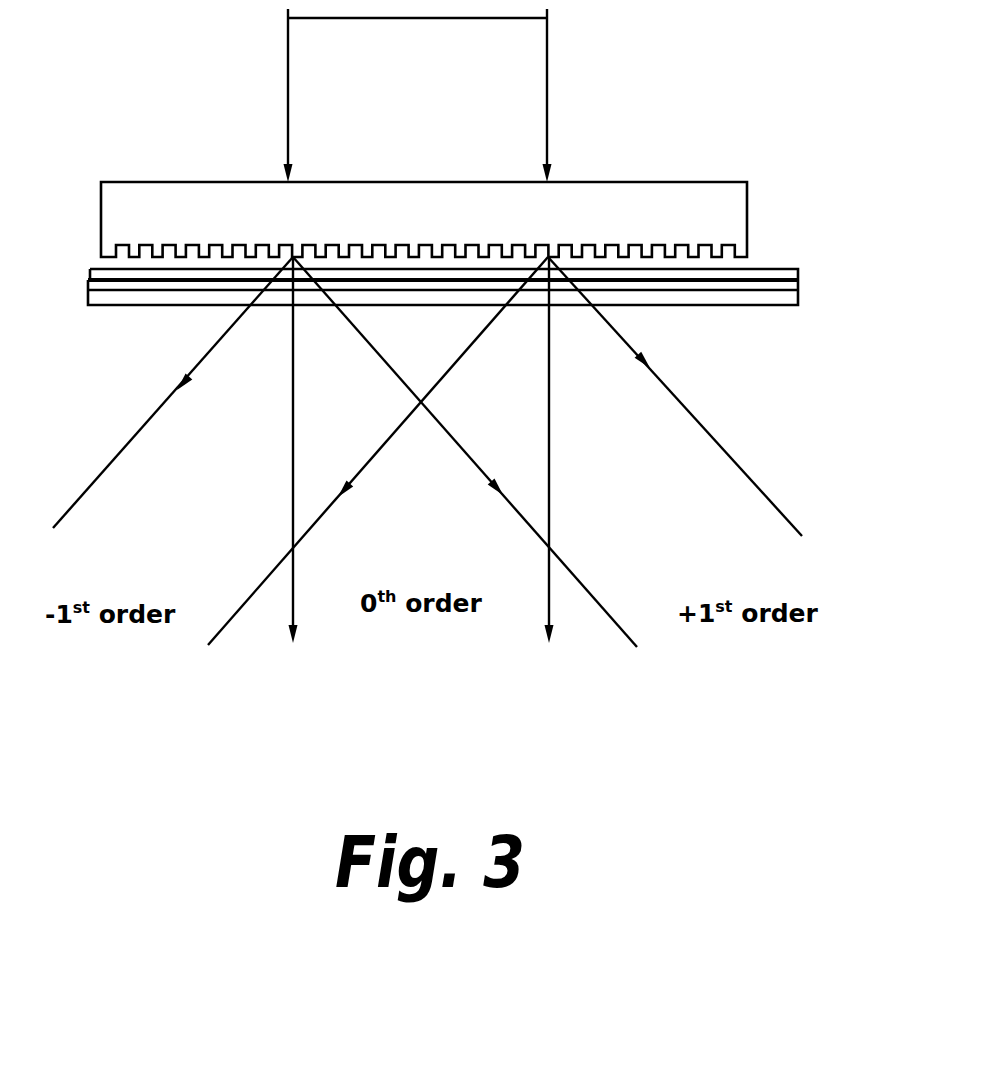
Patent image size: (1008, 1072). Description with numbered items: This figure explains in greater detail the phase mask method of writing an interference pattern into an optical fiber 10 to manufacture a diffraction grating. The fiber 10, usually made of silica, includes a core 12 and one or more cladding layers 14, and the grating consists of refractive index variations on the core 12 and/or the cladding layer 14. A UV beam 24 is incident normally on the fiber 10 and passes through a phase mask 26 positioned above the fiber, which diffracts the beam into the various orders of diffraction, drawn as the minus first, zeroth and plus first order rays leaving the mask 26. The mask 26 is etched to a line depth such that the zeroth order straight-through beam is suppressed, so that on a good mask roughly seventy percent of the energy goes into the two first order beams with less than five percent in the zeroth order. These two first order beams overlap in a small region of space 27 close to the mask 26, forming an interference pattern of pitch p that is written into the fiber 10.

The optical fiber 10 is at (514, 299).
The core 12 is at (768, 282).
The cladding layer 14 is at (762, 305).
The UV beam 24 is at (530, 86).
The phase mask 26 is at (728, 202).
The region of space 27 is at (383, 291).